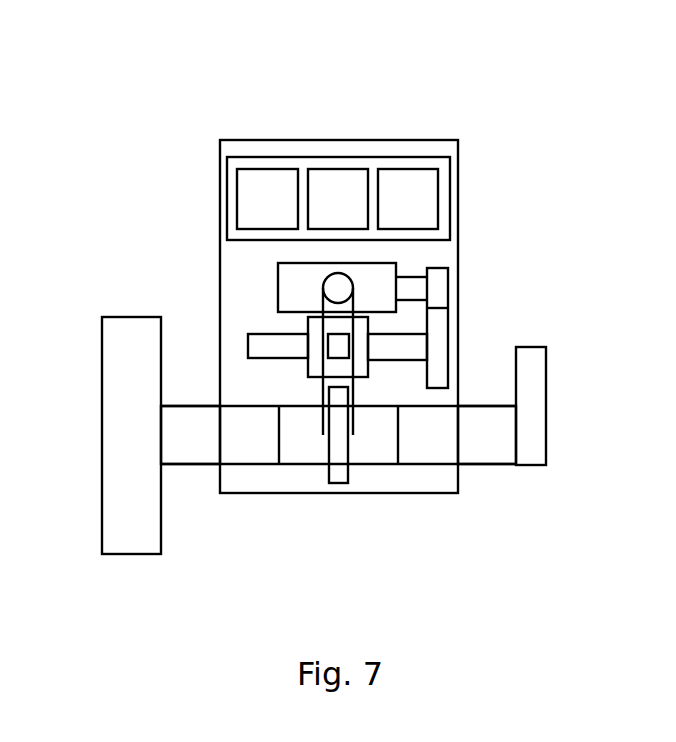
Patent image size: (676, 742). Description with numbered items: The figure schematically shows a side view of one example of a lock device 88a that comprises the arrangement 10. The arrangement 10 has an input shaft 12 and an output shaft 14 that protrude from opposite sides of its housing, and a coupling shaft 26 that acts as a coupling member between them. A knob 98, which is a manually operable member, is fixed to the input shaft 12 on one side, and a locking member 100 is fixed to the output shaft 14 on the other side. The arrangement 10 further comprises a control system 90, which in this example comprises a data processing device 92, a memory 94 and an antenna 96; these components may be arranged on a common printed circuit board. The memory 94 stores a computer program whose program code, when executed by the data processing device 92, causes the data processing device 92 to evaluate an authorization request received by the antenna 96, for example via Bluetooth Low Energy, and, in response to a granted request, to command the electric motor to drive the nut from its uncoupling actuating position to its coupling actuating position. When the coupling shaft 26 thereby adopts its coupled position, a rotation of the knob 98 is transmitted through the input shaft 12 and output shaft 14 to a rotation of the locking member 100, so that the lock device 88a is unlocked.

The lock device 88a is at (86, 83).
The arrangement 10 is at (198, 147).
The input shaft 12 is at (179, 433).
The output shaft 14 is at (480, 433).
The coupling shaft 26 is at (373, 435).
The control system 90 is at (445, 185).
The data processing device 92 is at (267, 199).
The memory 94 is at (338, 199).
The antenna 96 is at (408, 199).
The knob 98 is at (133, 535).
The locking member 100 is at (528, 377).